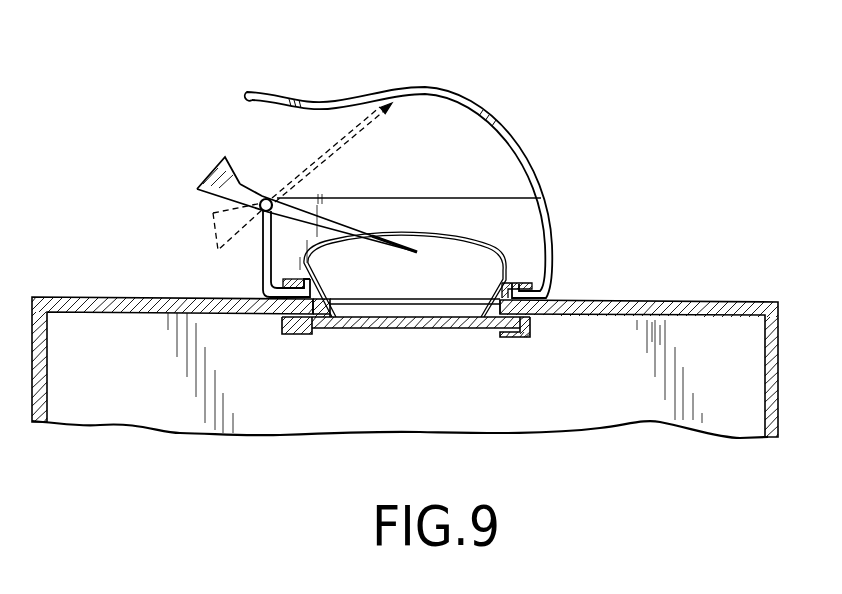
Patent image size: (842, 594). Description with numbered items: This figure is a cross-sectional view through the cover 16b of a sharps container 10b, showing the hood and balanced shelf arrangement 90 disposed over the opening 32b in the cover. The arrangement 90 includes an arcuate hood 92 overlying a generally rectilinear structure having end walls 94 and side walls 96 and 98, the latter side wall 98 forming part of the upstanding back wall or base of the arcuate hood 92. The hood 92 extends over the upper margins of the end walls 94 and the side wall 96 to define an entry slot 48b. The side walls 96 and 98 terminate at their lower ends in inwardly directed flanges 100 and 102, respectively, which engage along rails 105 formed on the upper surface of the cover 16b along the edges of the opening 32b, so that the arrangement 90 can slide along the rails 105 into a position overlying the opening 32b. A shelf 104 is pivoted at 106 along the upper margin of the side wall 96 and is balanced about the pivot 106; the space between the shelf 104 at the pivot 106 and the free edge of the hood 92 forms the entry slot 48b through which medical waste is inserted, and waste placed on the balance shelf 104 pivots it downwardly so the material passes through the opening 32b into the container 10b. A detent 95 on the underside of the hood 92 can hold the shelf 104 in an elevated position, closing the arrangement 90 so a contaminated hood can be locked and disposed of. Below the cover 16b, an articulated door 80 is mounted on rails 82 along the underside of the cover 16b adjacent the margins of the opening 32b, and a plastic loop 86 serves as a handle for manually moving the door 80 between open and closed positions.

The container 10b is at (133, 396).
The cover 16b is at (598, 302).
The opening 32b is at (482, 328).
The entry slot 48b is at (285, 135).
The articulated door 80 is at (353, 330).
The rails 82 is at (279, 334).
The plastic loop handle 86 is at (452, 241).
The hood and balanced shelf arrangement 90 is at (419, 181).
The arcuate hood 92 is at (454, 94).
The end walls 94 is at (398, 197).
The detent 95 is at (391, 108).
The side wall 96 is at (212, 212).
The side wall 98 is at (542, 201).
The inwardly directed flange 100 is at (267, 290).
The inwardly directed flange 102 is at (532, 316).
The shelf 104 is at (228, 158).
The rails 105 is at (289, 279).
The pivot 106 is at (261, 108).